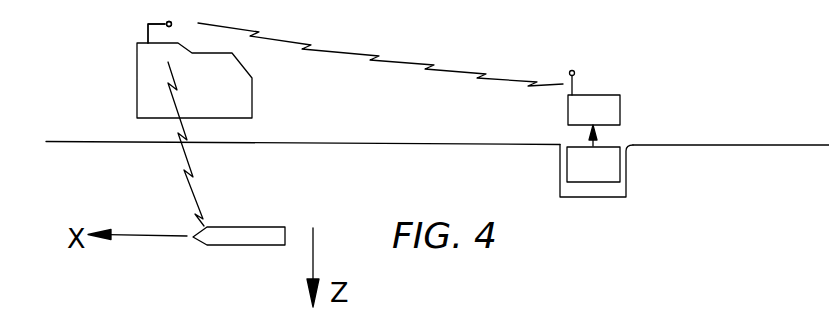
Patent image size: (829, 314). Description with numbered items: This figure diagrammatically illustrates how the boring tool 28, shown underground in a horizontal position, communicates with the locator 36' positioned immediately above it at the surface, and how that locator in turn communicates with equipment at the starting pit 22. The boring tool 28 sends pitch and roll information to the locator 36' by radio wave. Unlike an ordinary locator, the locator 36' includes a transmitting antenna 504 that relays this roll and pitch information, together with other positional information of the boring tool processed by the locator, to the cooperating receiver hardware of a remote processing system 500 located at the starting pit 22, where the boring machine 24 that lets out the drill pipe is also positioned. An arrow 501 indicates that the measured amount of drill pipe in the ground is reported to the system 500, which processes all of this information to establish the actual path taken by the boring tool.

The locator 36' is at (152, 70).
The transmitting antenna 504 is at (153, 24).
The boring tool 28 is at (238, 235).
The remote processing system 500 is at (611, 78).
The arrow 501 is at (591, 133).
The starting pit 22 is at (597, 196).
The boring machine 24 is at (610, 167).